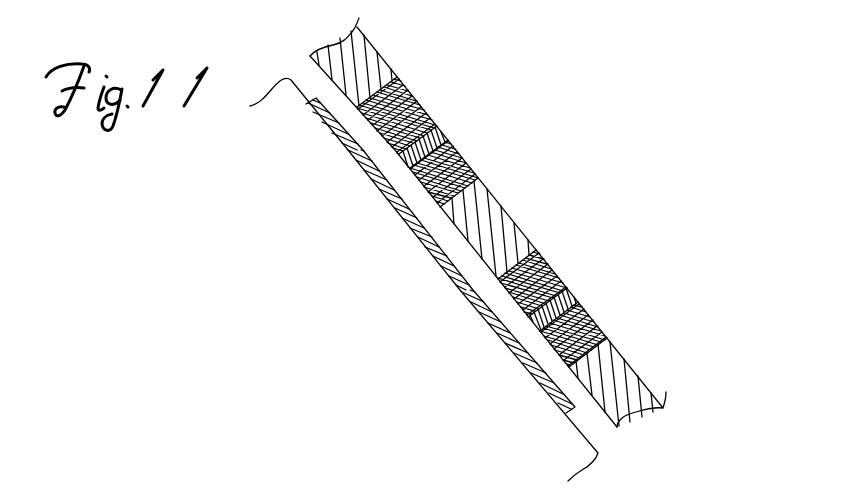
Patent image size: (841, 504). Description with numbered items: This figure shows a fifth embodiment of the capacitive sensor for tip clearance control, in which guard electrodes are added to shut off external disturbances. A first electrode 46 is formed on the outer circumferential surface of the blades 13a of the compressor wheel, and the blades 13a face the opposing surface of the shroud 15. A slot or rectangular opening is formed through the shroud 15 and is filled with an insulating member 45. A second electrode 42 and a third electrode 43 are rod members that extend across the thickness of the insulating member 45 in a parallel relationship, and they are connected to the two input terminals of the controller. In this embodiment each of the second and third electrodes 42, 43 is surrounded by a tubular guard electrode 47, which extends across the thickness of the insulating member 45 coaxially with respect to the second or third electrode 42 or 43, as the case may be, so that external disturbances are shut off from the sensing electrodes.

The first electrode 46 is at (308, 100).
The blades 13a is at (433, 316).
The shroud 15 is at (633, 380).
The insulating member 45 is at (392, 90).
The tubular guard electrodes 47 is at (412, 99).
The second electrode 42 is at (422, 132).
The third electrode 43 is at (552, 282).